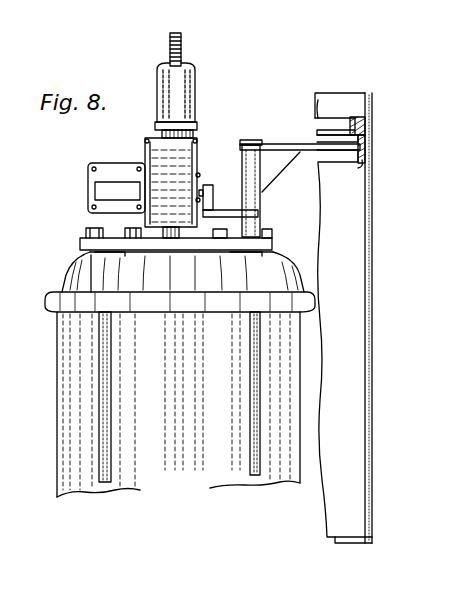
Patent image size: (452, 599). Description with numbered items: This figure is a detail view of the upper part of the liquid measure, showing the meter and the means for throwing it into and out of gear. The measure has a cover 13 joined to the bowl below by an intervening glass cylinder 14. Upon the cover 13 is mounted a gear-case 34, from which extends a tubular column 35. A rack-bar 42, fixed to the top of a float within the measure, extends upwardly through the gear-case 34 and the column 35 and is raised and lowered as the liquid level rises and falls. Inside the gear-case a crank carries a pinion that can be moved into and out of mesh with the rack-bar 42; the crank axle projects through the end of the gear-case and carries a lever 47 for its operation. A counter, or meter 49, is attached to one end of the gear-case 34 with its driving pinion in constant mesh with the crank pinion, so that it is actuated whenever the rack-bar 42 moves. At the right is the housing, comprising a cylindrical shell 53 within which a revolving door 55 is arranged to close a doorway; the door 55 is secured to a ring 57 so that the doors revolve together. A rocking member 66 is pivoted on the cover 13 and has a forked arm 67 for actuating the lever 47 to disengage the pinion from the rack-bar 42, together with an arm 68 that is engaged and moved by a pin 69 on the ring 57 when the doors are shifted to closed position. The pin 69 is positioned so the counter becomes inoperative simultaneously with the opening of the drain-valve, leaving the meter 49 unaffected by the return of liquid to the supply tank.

The cover 13 is at (71, 271).
The glass cylinder 14 is at (58, 362).
The gear-case 34 is at (190, 137).
The tubular column 35 is at (193, 80).
The rack-bar 42 is at (181, 39).
The lever 47 is at (210, 190).
The counter or meter 49 is at (88, 187).
The cylindrical shell 53 is at (371, 277).
The revolving door 55 is at (364, 206).
The ring 57 is at (358, 168).
The rocking member 66 is at (261, 205).
The forked arm 67 is at (223, 212).
The arm 68 is at (292, 140).
The pin 69 is at (364, 141).